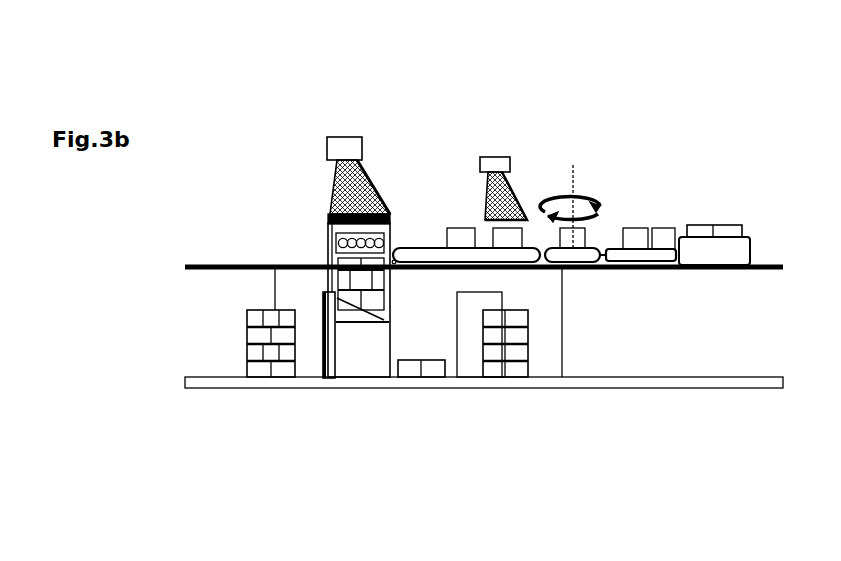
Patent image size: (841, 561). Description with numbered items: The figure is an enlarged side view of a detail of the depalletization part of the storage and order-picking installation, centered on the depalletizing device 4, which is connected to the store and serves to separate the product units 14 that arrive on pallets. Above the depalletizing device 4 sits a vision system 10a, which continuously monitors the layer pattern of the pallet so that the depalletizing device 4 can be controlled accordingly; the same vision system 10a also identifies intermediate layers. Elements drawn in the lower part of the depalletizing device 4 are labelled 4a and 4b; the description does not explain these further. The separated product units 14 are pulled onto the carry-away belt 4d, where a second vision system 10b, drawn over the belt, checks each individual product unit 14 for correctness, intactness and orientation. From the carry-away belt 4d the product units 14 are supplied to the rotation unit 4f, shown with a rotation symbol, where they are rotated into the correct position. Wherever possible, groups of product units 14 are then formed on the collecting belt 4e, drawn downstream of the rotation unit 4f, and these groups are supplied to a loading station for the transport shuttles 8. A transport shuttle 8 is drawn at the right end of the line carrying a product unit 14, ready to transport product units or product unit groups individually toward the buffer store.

The depalletizing device 4 is at (354, 362).
The stack of storage elements 4a is at (264, 362).
The containers 4b is at (421, 368).
The carry-away belt 4d is at (430, 253).
The collecting belt 4e is at (632, 250).
The rotation unit 4f is at (571, 162).
The transport shuttles 8 is at (740, 250).
The vision system 10a is at (340, 147).
The vision system 10b is at (493, 163).
The product units 14 is at (725, 230).